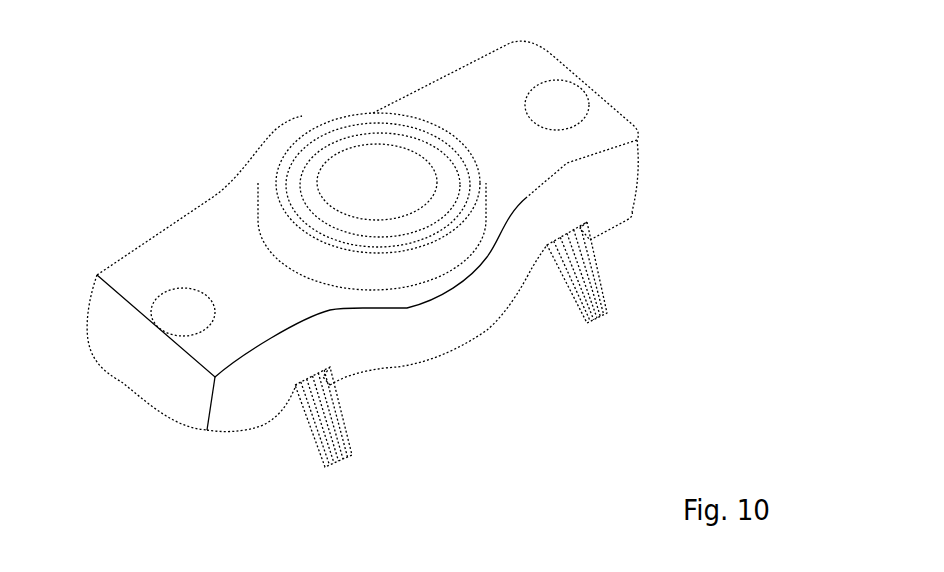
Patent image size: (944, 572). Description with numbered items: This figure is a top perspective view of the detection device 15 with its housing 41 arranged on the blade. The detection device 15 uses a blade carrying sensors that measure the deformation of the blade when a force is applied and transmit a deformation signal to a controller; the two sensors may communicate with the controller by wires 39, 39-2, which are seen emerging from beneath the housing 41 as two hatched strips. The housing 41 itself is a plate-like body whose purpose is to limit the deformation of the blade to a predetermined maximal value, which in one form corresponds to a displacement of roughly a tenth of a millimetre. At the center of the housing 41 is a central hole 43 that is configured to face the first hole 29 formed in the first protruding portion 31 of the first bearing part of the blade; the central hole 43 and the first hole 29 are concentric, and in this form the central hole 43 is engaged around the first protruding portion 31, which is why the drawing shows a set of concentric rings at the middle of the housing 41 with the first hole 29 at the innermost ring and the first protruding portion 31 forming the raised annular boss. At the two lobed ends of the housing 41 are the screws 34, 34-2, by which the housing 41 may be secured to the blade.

The detection device 15 is at (163, 123).
The first hole 29 is at (365, 191).
The first protruding portion 31 is at (407, 230).
The screw 34 is at (558, 100).
The screw 34-2 is at (183, 305).
The wire 39 is at (590, 297).
The wire 39-2 is at (332, 425).
The housing 41 is at (527, 177).
The central hole 43 is at (280, 151).